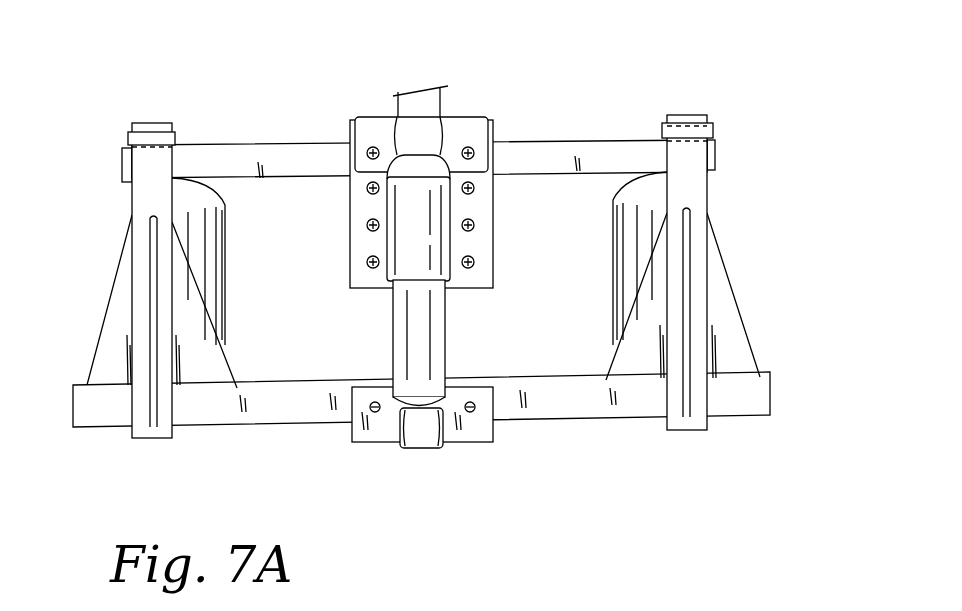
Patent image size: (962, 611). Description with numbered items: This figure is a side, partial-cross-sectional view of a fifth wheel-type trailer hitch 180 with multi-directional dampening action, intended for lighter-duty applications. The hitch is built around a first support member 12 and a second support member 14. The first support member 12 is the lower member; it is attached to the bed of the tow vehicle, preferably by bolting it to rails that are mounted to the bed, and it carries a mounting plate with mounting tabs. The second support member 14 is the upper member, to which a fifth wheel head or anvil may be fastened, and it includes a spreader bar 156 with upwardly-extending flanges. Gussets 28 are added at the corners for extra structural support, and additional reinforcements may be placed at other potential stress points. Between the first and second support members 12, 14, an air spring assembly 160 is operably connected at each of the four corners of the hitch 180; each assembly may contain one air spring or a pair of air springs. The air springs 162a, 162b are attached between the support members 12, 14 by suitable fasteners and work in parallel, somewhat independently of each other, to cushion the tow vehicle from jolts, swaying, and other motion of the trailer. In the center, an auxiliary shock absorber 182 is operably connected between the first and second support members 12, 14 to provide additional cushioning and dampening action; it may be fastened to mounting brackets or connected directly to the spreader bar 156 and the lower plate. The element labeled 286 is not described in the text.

The first support member 12 is at (322, 432).
The second support member 14 is at (265, 142).
The gussets 28 is at (100, 337).
The spreader bar 156 is at (578, 146).
The air spring assembly 160 is at (247, 303).
The air spring 162a is at (226, 228).
The air spring 162b is at (616, 276).
The fifth wheel hitch 180 is at (545, 70).
The shock absorber 182 is at (447, 348).
The mounting tab 286 is at (393, 108).